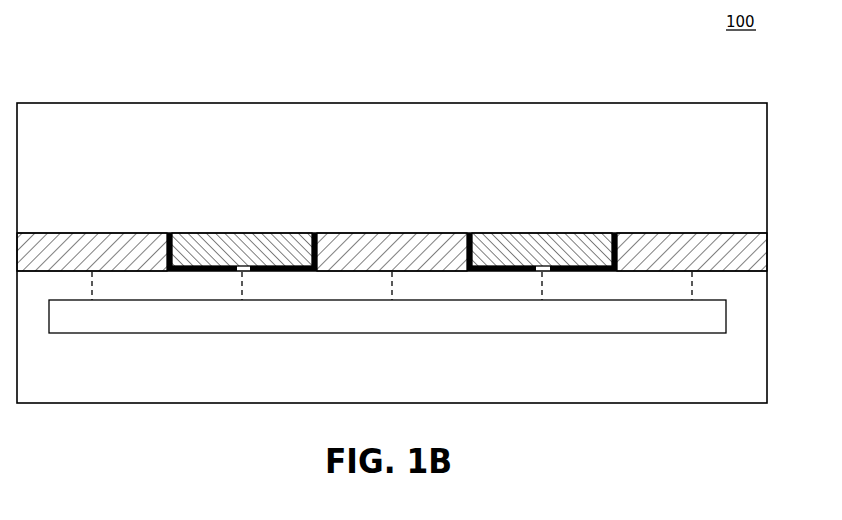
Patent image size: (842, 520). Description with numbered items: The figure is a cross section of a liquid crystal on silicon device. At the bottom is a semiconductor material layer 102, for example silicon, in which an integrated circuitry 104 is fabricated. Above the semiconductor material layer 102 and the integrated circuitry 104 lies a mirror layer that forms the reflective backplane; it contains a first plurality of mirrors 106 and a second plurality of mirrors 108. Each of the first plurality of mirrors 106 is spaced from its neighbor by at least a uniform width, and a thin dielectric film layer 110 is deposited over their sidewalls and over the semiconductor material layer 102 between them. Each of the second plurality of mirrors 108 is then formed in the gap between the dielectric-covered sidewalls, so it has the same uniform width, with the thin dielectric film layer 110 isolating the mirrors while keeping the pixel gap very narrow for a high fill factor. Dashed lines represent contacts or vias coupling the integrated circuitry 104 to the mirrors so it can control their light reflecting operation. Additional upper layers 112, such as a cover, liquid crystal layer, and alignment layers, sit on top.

The semiconductor material layer 102 is at (736, 401).
The integrated circuitry 104 is at (694, 334).
The first plurality of mirrors 106 is at (100, 233).
The second plurality of mirrors 108 is at (260, 233).
The thin dielectric film layer 110 is at (169, 234).
The additional upper layers 112 is at (655, 108).